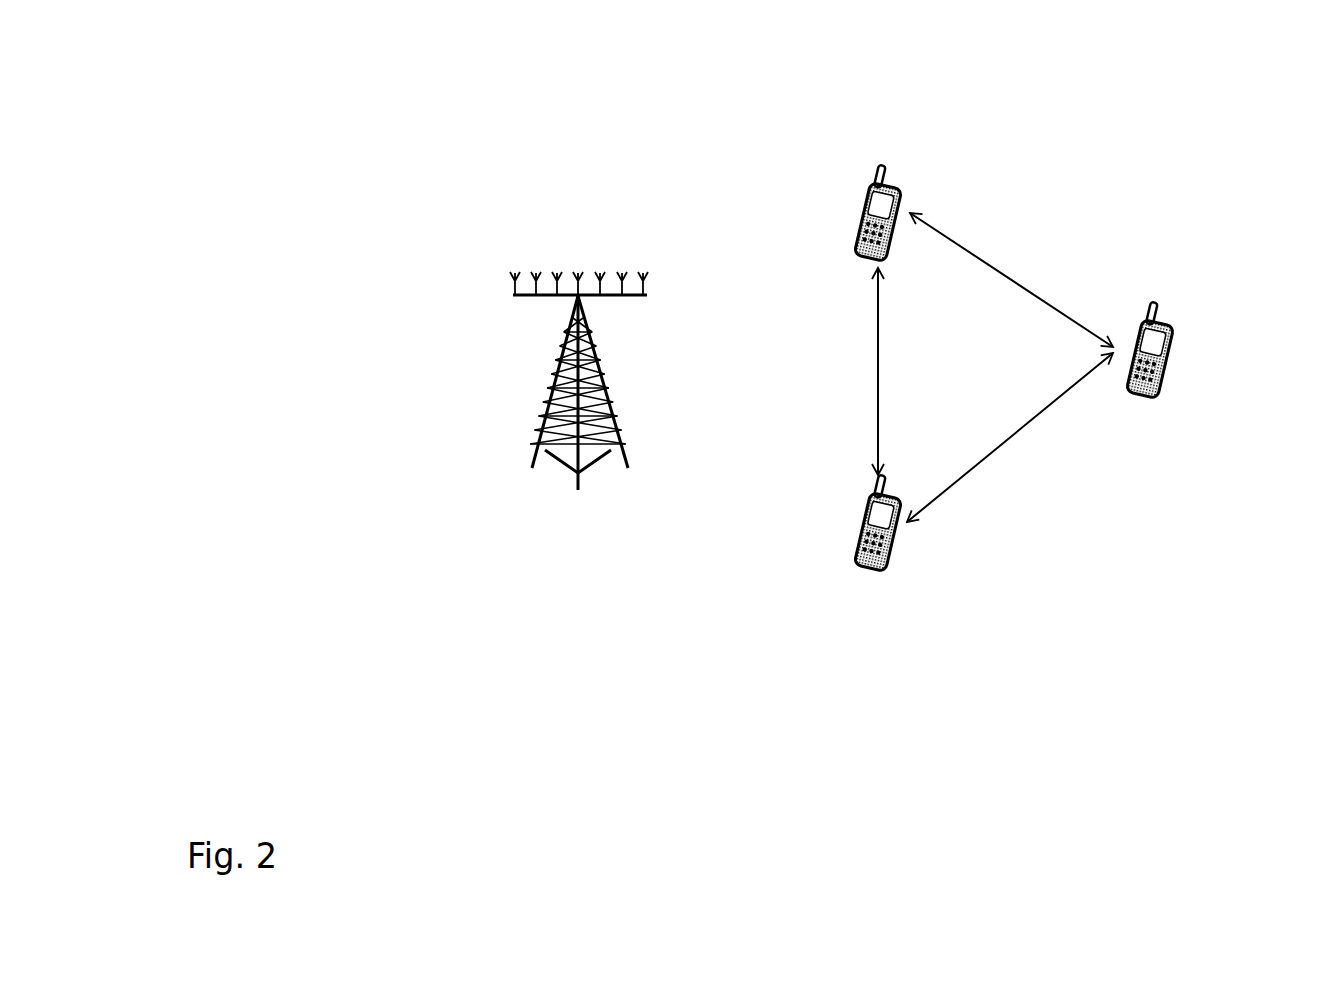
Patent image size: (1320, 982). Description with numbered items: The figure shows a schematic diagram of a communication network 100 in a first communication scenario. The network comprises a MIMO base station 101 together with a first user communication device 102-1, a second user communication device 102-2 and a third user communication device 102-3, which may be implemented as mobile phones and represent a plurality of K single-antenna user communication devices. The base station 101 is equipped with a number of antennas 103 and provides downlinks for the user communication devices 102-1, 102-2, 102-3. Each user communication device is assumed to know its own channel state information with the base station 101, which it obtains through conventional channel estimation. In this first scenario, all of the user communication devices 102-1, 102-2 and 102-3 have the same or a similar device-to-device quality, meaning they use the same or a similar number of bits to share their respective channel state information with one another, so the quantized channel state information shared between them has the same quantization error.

The communication network 100 is at (498, 110).
The base station 101 is at (562, 388).
The first user communication device 102-1 is at (893, 185).
The second user communication device 102-2 is at (877, 575).
The third user communication device 102-3 is at (1173, 360).
The antennas 103 is at (513, 296).